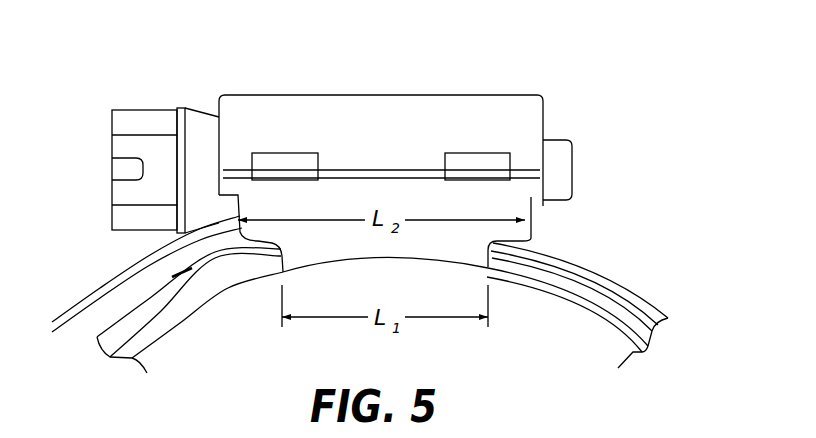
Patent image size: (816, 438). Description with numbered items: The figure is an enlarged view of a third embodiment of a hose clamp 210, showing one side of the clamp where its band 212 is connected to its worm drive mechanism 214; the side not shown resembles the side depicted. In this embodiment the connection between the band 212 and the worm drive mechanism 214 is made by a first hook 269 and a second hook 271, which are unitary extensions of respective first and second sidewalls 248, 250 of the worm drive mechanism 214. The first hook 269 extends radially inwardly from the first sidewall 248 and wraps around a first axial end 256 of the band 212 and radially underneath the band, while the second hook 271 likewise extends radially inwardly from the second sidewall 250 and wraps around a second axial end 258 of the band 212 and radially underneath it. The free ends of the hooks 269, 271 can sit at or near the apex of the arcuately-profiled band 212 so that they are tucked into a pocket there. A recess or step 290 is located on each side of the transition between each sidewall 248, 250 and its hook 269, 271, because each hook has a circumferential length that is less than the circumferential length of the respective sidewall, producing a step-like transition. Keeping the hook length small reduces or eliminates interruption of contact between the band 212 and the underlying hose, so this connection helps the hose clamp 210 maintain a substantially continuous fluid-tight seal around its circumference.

The hose clamp 210 is at (609, 131).
The band 212 is at (636, 290).
The worm drive mechanism 214 is at (348, 88).
The first sidewall 248 is at (445, 233).
The second sidewall 250 is at (470, 203).
The first axial end 256 is at (198, 310).
The second axial end 258 is at (197, 314).
The first hook 269 is at (385, 278).
The second hook 271 is at (461, 257).
The recess or step 290 is at (598, 254).